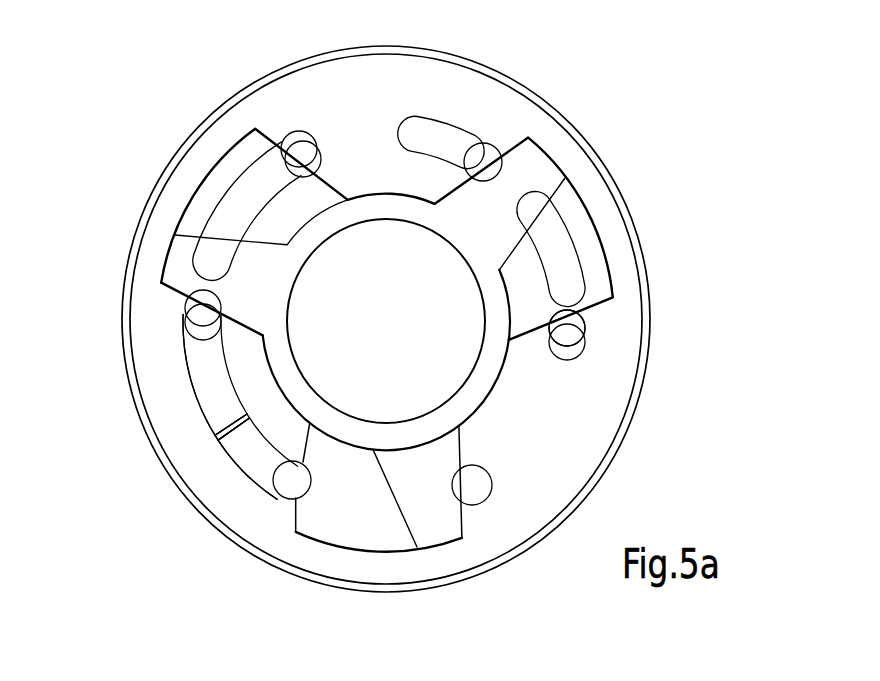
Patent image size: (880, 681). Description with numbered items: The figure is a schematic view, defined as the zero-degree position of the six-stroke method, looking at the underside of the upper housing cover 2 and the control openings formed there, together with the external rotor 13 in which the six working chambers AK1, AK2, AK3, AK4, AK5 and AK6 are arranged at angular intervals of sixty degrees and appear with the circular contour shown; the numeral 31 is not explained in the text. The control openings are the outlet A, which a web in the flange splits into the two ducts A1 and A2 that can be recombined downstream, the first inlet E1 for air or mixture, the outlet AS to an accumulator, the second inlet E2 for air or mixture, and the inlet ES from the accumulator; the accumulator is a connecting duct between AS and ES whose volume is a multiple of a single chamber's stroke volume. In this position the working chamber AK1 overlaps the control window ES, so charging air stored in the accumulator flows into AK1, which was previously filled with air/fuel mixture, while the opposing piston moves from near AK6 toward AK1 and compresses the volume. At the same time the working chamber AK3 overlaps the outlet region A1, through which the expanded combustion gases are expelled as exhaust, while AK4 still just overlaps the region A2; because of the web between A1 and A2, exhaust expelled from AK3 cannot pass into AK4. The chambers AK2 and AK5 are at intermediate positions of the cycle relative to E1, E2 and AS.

The upper housing cover 2 is at (592, 455).
The external rotor 13 is at (648, 265).
The rotor body 31 is at (552, 193).
The working chamber AK1 is at (585, 320).
The working chamber AK2 is at (475, 490).
The working chamber AK3 is at (285, 490).
The working chamber AK4 is at (193, 310).
The working chamber AK5 is at (310, 147).
The working chamber AK6 is at (490, 153).
The first inlet E1 is at (247, 211).
The second inlet E2 is at (551, 249).
The outlet to accumulator AS is at (441, 142).
The inlet from accumulator ES is at (567, 335).
The outlet A is at (240, 406).
The outlet duct A1 is at (246, 456).
The outlet duct A2 is at (216, 377).